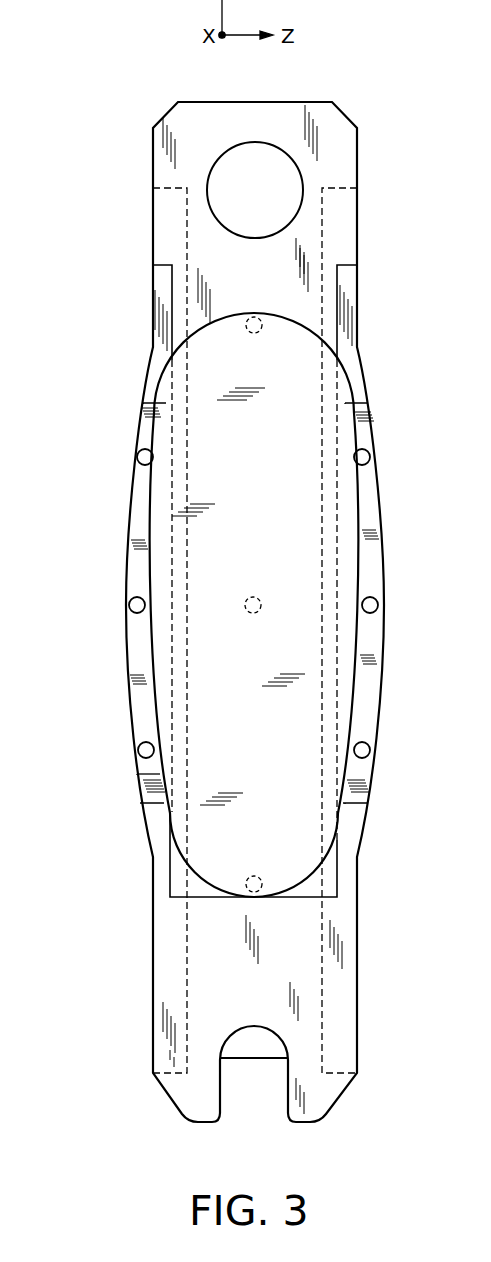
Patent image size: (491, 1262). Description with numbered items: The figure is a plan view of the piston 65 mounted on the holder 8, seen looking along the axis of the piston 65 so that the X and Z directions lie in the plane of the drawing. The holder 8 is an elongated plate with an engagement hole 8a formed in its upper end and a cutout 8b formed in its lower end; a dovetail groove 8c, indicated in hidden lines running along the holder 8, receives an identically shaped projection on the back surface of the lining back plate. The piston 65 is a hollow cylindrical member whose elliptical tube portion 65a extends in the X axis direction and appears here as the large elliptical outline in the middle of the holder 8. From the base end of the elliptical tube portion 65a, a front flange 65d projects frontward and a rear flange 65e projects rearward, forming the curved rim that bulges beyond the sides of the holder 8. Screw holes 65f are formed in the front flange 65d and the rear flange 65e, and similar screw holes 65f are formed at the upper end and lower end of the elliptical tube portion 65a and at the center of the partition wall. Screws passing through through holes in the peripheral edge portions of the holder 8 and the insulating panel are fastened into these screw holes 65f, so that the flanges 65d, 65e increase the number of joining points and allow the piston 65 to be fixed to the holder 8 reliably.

The holder 8 is at (340, 112).
The engagement hole 8a is at (283, 155).
The cutout 8b is at (275, 1027).
The dovetail groove 8c is at (188, 228).
The piston 65 is at (167, 811).
The elliptical tube portion 65a is at (138, 777).
The front flange 65d is at (138, 703).
The rear flange 65e is at (368, 708).
The screw holes 65f is at (370, 602).